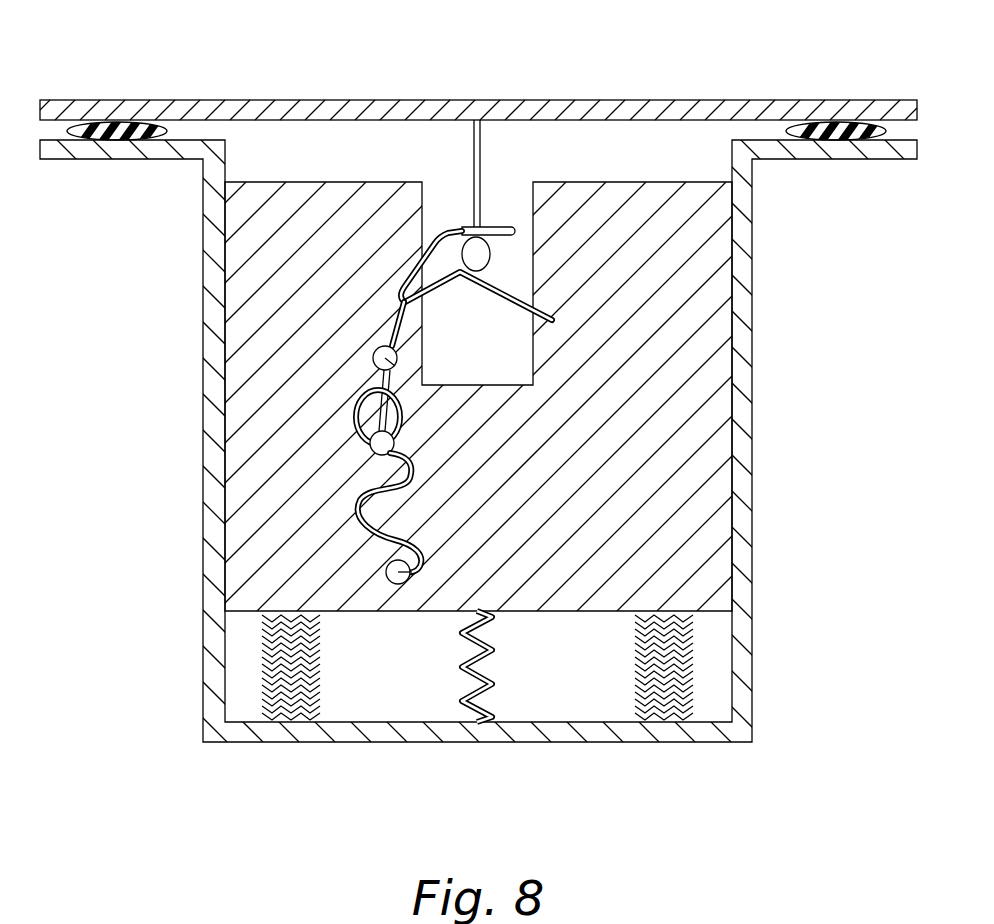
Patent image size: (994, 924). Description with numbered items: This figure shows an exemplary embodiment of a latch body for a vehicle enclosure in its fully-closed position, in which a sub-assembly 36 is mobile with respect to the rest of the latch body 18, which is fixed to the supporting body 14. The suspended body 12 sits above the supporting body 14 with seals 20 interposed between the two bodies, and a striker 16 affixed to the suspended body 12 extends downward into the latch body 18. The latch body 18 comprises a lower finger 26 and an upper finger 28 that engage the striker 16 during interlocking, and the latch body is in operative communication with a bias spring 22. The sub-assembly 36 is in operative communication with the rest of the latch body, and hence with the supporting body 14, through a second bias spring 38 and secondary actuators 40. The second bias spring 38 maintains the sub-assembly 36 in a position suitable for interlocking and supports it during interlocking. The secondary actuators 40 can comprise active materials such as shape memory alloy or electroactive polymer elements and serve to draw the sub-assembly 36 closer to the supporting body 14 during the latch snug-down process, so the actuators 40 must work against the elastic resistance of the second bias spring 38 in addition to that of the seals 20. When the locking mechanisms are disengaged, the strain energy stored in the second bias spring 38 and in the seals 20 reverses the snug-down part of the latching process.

The suspended body 12 is at (310, 100).
The supporting body 14 is at (832, 159).
The striker 16 is at (481, 157).
The latch body 18 is at (448, 200).
The seals 20 is at (101, 124).
The bias spring 22 is at (353, 415).
The lower finger 26 is at (500, 297).
The upper finger 28 is at (500, 227).
The sub-assembly 36 is at (648, 405).
The second bias spring 38 is at (460, 665).
The secondary actuators 40 is at (265, 660).